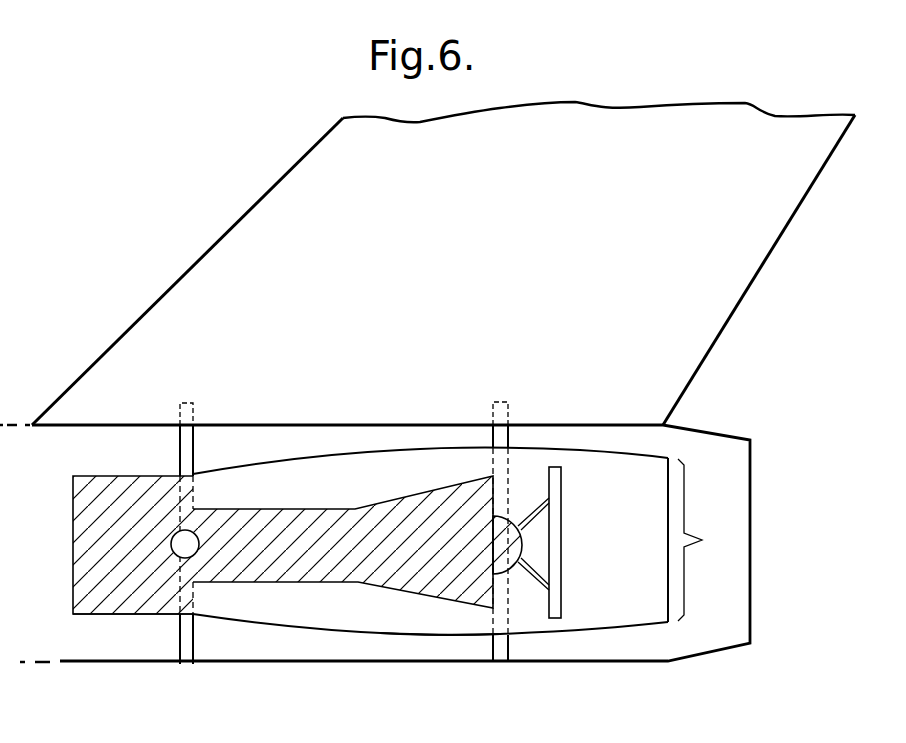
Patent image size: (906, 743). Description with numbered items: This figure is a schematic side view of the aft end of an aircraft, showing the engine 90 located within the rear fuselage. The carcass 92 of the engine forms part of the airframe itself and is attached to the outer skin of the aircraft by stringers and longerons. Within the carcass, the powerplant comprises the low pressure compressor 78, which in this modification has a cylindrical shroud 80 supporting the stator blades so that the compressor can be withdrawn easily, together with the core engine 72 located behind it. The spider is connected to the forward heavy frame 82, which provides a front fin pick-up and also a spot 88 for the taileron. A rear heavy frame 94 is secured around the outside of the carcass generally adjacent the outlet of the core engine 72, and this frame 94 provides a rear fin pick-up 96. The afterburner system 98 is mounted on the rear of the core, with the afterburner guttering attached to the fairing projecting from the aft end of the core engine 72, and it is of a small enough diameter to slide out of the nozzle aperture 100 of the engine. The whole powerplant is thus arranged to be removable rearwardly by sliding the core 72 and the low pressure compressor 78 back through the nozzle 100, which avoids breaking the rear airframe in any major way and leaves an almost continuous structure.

The core engine 72 is at (300, 508).
The low pressure compressor 78 is at (93, 643).
The cylindrical shroud 80 is at (100, 476).
The forward heavy frame 82 is at (186, 455).
The spot for the taileron 88 is at (162, 553).
The engine 90 is at (240, 643).
The carcass 92 is at (434, 640).
The rear heavy frame 94 is at (180, 418).
The rear fin pick-up 96 is at (490, 411).
The afterburner system 98 is at (557, 520).
The nozzle aperture 100 is at (470, 535).